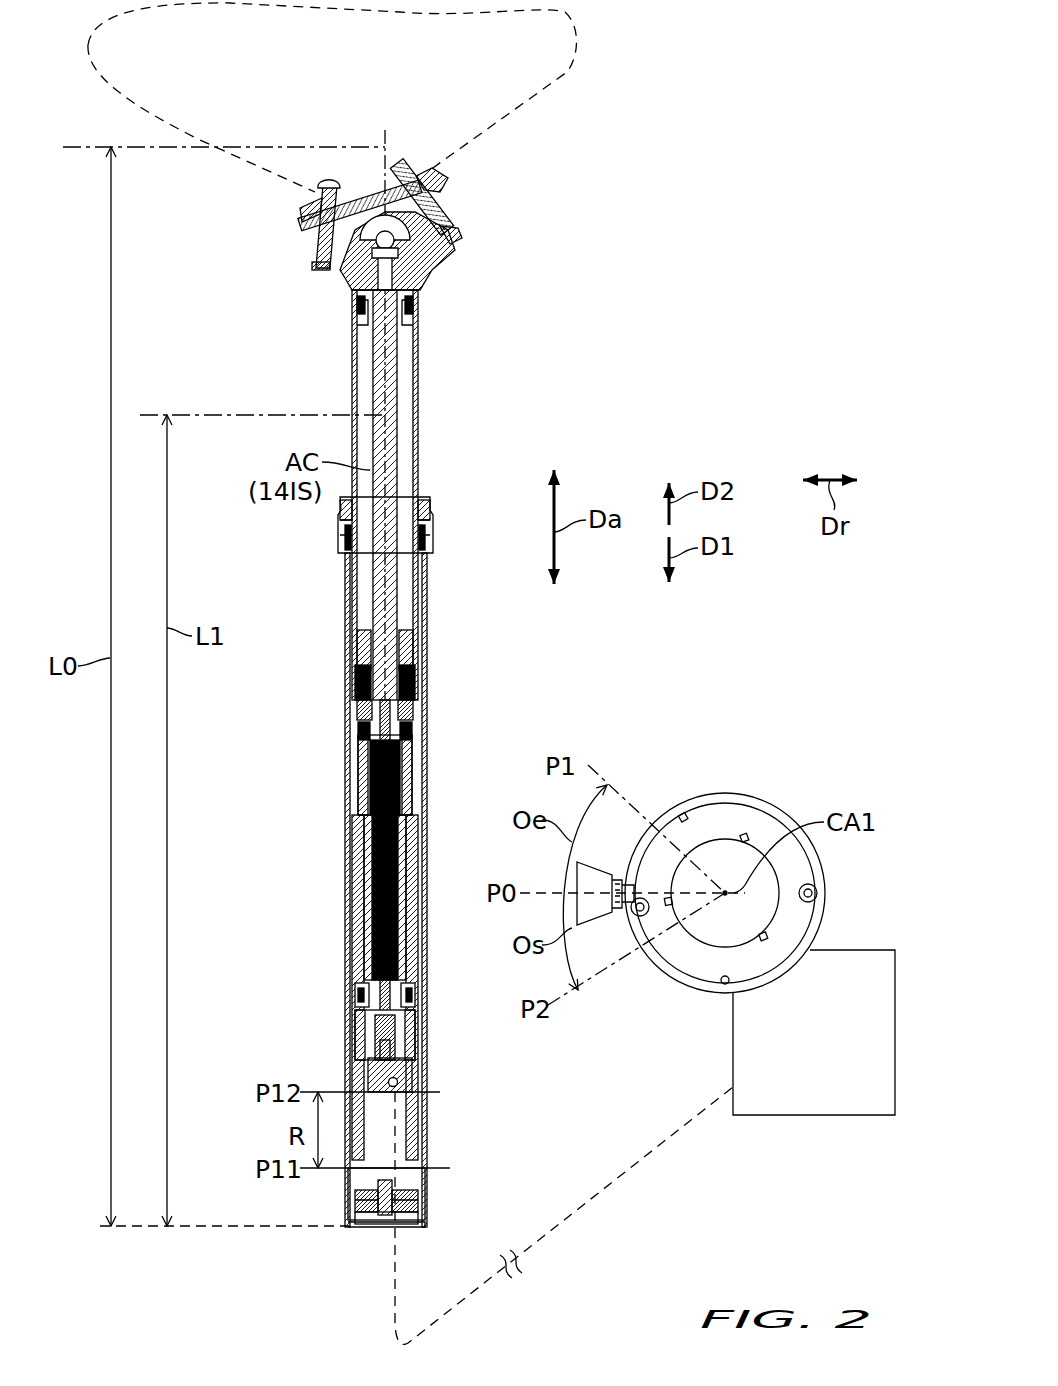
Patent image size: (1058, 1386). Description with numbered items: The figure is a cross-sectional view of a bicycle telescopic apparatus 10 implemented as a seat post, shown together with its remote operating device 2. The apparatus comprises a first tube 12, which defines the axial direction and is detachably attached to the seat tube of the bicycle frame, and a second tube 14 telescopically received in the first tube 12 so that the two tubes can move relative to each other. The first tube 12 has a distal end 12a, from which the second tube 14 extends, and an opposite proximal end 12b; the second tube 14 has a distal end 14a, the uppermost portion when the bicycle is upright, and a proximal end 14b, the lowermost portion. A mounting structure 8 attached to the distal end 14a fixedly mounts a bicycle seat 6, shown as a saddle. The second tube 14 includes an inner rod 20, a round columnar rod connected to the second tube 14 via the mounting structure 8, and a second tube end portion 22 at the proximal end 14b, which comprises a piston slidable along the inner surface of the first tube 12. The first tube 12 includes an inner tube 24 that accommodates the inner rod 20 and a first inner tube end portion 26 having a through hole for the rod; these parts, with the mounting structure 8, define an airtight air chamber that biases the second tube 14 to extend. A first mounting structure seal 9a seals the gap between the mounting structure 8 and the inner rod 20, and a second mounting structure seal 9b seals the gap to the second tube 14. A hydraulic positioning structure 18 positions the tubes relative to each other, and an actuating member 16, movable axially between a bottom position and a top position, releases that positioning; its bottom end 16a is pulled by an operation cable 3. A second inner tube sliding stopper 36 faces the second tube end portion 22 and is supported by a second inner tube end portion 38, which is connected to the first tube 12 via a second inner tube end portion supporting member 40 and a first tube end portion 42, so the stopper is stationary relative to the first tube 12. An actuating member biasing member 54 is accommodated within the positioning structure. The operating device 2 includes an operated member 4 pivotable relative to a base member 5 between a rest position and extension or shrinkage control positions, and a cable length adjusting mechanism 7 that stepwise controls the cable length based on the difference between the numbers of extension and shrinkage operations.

The operating device 2 is at (730, 793).
The operation cable 3 is at (680, 1130).
The operated member 4 is at (605, 866).
The base member 5 is at (712, 820).
The bicycle seat 6 is at (567, 72).
The cable length adjusting mechanism 7 is at (840, 1115).
The mounting structure 8 is at (468, 205).
The first mounting structure seal 9a is at (312, 264).
The second mounting structure seal 9b is at (352, 296).
The bicycle telescopic apparatus 10 is at (495, 265).
The first tube 12 is at (428, 778).
The distal end 12a is at (428, 545).
The proximal end 12b is at (425, 1205).
The second tube 14 is at (422, 378).
The distal end 14a is at (410, 300).
The proximal end 14b is at (418, 694).
The actuating member 16 is at (418, 1040).
The bottom end 16a is at (396, 1086).
The hydraulic positioning structure 18 is at (403, 800).
The inner rod 20 is at (425, 510).
The second tube end portion 22 is at (360, 712).
The inner tube 24 is at (360, 740).
The first inner tube end portion 26 is at (360, 640).
The second inner tube sliding stopper 36 is at (355, 960).
The second inner tube end portion 38 is at (355, 995).
The second inner tube end portion supporting member 40 is at (355, 1032).
The first tube end portion 42 is at (350, 1205).
The actuating member biasing member 54 is at (400, 930).